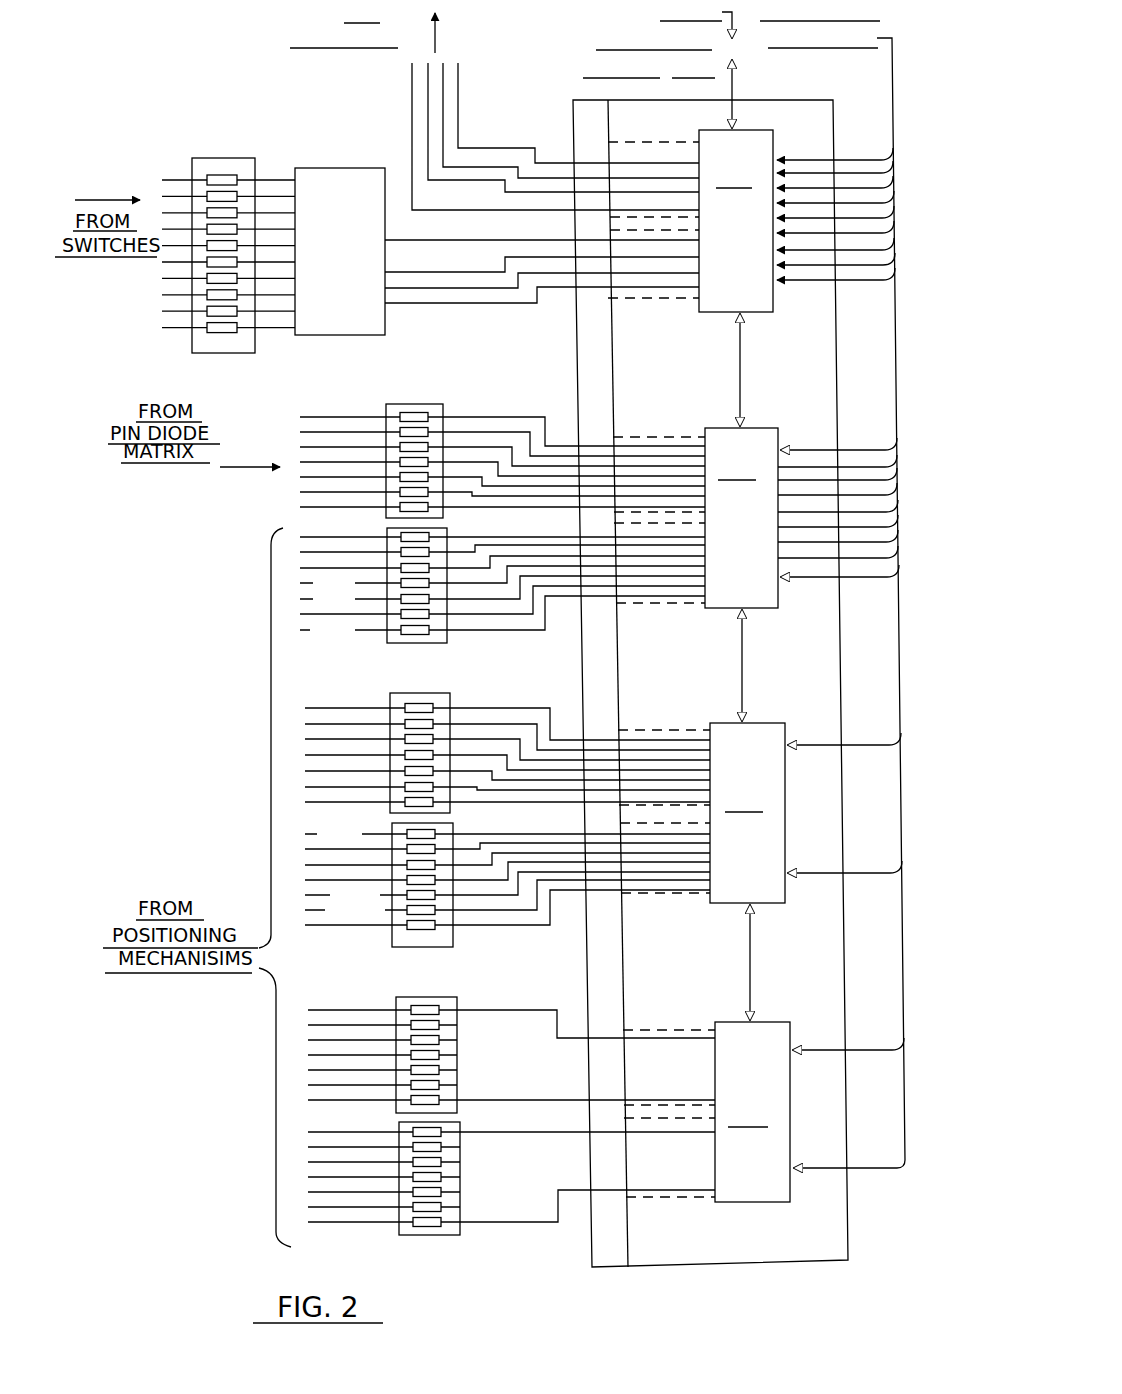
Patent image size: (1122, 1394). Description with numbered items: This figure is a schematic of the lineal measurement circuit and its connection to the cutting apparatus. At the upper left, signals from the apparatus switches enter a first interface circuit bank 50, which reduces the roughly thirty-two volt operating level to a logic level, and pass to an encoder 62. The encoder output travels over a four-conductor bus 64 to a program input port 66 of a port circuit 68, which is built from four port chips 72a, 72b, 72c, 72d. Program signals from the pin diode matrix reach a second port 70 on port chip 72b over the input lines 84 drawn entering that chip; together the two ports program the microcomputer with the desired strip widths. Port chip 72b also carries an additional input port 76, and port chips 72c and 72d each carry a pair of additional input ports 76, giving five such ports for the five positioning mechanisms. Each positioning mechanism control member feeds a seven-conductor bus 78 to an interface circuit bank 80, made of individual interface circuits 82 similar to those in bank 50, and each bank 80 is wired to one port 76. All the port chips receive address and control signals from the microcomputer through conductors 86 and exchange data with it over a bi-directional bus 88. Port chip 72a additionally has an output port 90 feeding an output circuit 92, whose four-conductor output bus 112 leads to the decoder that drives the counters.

The first interface circuit bank 50 is at (237, 160).
The encoder 62 is at (340, 170).
The four-conductor bus 64 is at (438, 307).
The program input port 66 is at (622, 304).
The port circuit 68 is at (590, 1238).
The second port 70 is at (672, 418).
The port chip 72a is at (736, 221).
The port chip 72b is at (741, 518).
The port chip 72c is at (747, 813).
The port chip 72d is at (752, 1112).
The additional input port 76 is at (692, 1200).
The bus 78 is at (355, 1010).
The interface circuit bank 80 is at (398, 870).
The interface circuit 82 is at (412, 850).
The pin diode matrix input lines 84 is at (690, 560).
The address and control signal conductors 86 is at (812, 1048).
The bi-directional bus 88 is at (740, 70).
The output port 90 is at (652, 141).
The output circuit 92 is at (498, 132).
The output bus 112 is at (458, 85).